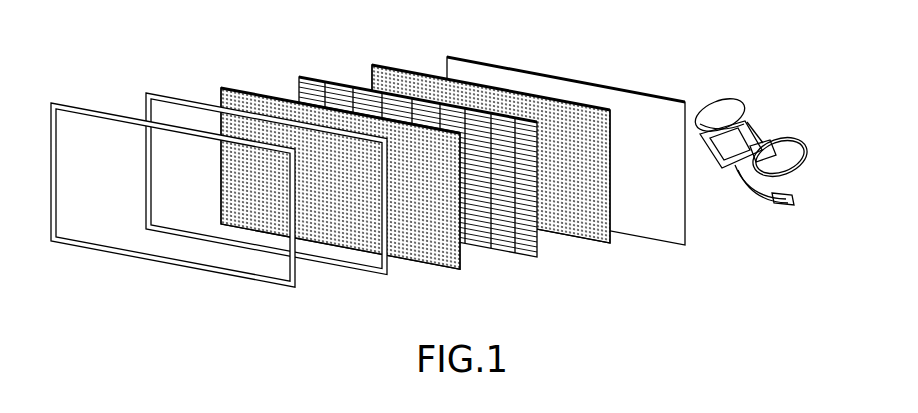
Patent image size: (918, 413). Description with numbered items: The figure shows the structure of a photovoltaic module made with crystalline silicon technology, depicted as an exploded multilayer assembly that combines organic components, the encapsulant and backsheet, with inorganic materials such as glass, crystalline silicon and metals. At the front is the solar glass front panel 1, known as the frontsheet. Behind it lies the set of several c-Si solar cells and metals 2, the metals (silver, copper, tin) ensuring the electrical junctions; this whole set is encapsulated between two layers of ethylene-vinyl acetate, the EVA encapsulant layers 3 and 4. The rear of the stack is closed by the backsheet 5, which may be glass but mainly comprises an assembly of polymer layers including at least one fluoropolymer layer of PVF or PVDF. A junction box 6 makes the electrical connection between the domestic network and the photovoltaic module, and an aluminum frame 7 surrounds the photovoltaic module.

The solar glass front panel 1 is at (345, 260).
The set of c-Si solar cells and metals 2 is at (315, 80).
The EVA encapsulant layer 3 is at (240, 89).
The EVA encapsulant layer 4 is at (400, 70).
The backsheet 5 is at (560, 78).
The junction box 6 is at (766, 132).
The aluminum frame 7 is at (60, 245).